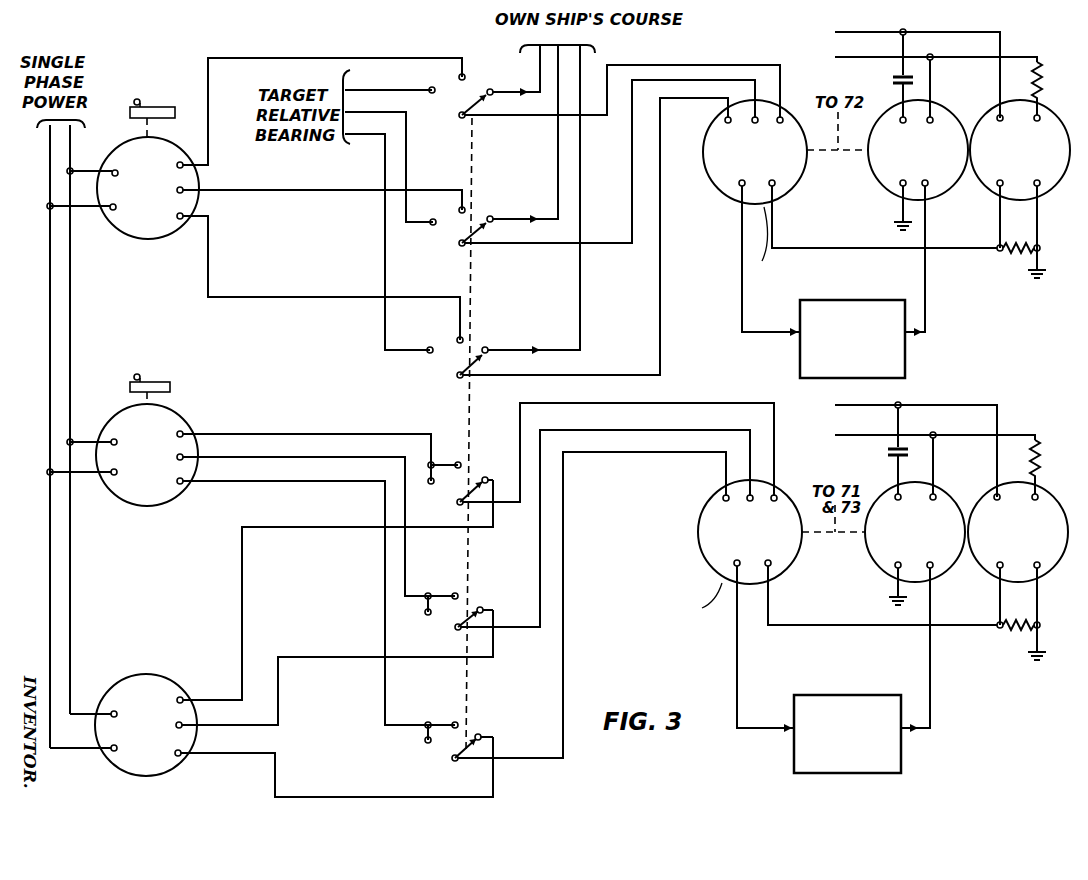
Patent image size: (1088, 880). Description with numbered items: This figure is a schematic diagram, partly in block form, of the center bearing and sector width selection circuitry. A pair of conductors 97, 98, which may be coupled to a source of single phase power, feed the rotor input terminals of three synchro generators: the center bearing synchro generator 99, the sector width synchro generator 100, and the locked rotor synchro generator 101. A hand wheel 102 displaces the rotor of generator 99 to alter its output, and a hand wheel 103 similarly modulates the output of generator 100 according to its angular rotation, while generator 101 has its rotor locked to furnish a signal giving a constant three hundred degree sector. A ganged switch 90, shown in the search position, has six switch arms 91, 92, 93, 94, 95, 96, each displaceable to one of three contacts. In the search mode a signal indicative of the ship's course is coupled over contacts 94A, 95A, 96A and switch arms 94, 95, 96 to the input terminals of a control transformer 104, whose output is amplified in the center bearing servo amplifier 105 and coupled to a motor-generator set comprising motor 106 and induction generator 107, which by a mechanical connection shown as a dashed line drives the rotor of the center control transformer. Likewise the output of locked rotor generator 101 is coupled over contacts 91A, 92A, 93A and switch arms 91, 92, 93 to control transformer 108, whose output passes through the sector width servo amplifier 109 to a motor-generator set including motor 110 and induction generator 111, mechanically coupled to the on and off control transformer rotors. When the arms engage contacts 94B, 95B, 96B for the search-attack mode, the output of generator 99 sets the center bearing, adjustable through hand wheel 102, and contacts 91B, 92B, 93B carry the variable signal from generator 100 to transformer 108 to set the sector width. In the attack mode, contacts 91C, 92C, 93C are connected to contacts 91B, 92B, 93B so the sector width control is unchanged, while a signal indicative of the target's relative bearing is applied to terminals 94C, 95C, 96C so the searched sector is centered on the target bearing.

The ganged switch 90 is at (467, 470).
The switch arm 91 is at (454, 761).
The contact 91A is at (481, 736).
The contact 91B is at (460, 714).
The contact 91C is at (426, 742).
The switch arm 92 is at (455, 630).
The contact 92A is at (497, 606).
The contact 92B is at (456, 593).
The contact 92C is at (427, 616).
The switch arm 93 is at (457, 505).
The contact 93A is at (485, 477).
The contact 93B is at (466, 449).
The contact 93C is at (438, 490).
The switch arm 94 is at (456, 377).
The contact 94A is at (492, 344).
The contact 94B is at (459, 338).
The contact 94C is at (431, 352).
The switch arm 95 is at (458, 246).
The contact 95A is at (505, 211).
The contact 95B is at (460, 207).
The contact 95C is at (433, 226).
The switch arm 96 is at (458, 117).
The contact 96A is at (493, 90).
The contact 96B is at (463, 73).
The contact 96C is at (440, 82).
The conductor 97 is at (48, 139).
The conductor 98 is at (70, 154).
The center bearing synchro generator 99 is at (178, 149).
The sector width synchro generator 100 is at (180, 425).
The locked rotor synchro generator 101 is at (177, 691).
The hand wheel 102 is at (168, 107).
The hand wheel 103 is at (168, 377).
The control transformer 104 is at (714, 130).
The center bearing servo amplifier 105 is at (853, 339).
The motor 106 is at (873, 180).
The induction generator 107 is at (1063, 190).
The control transformer 108 is at (717, 584).
The sector width servo amplifier 109 is at (848, 734).
The motor 110 is at (881, 568).
The induction generator 111 is at (1054, 572).